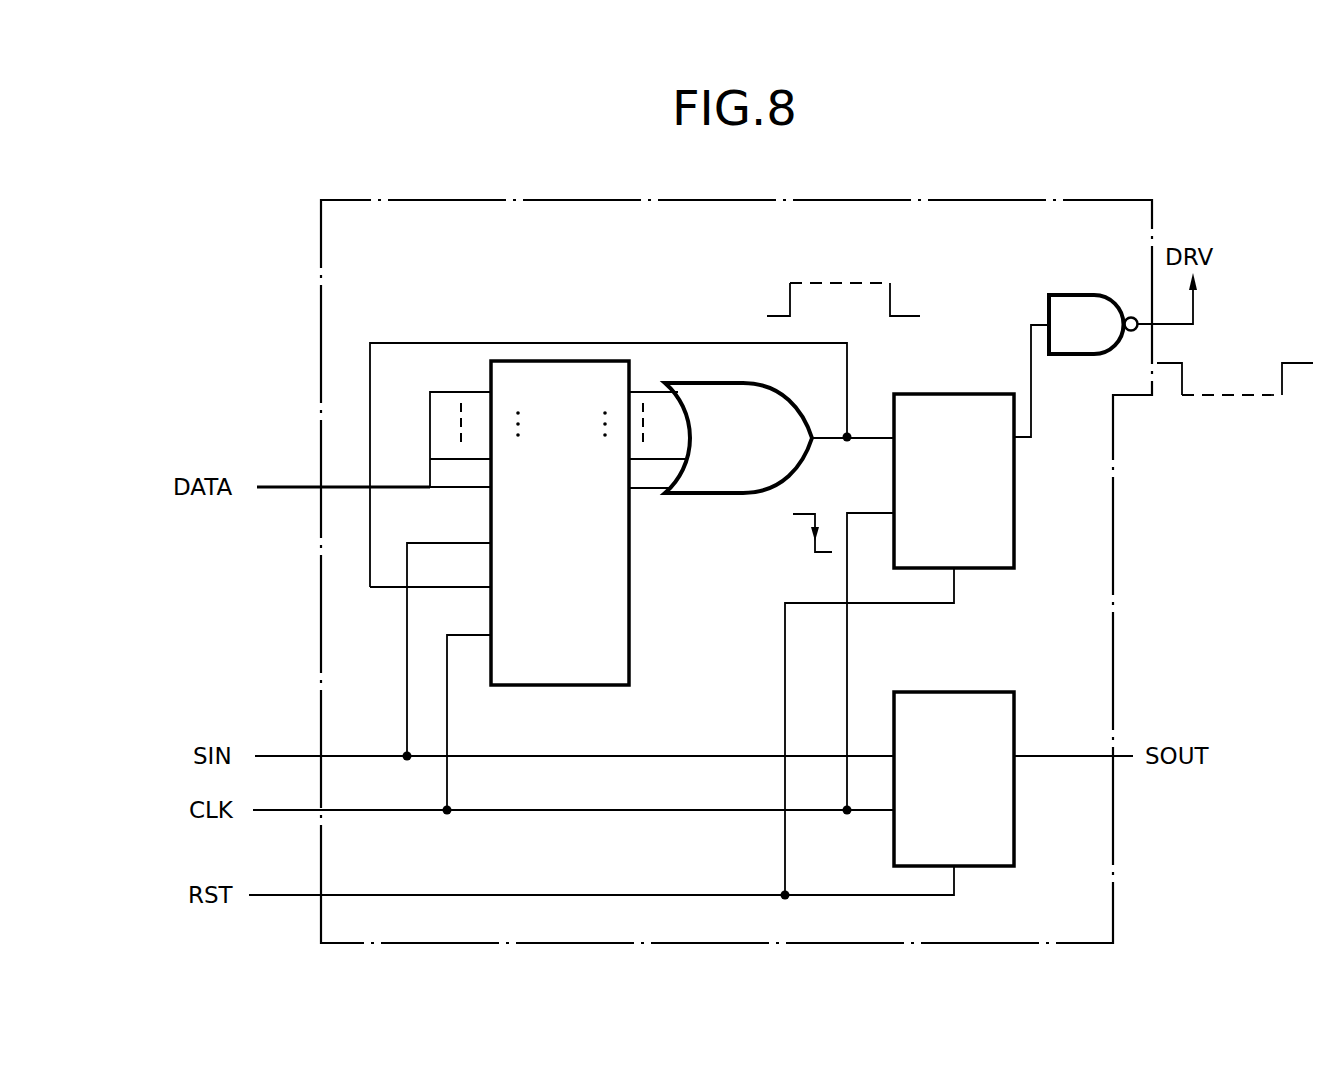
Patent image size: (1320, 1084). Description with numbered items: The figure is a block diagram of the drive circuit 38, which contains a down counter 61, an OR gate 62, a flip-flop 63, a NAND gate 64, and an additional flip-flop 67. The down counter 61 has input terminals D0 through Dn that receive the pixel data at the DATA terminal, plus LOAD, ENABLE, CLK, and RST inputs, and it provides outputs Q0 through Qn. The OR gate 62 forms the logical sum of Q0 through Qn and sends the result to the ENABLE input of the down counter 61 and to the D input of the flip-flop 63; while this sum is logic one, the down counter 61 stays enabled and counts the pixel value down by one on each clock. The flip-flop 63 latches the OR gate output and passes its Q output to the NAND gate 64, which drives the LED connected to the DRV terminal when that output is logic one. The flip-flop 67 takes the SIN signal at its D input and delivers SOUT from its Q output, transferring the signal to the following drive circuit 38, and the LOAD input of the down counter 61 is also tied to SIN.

The drive circuit 38 is at (931, 199).
The down counter 61 is at (630, 655).
The OR gate 62 is at (797, 404).
The flip-flop 63 is at (978, 393).
The NAND gate 64 is at (1086, 295).
The flip-flop 67 is at (980, 691).